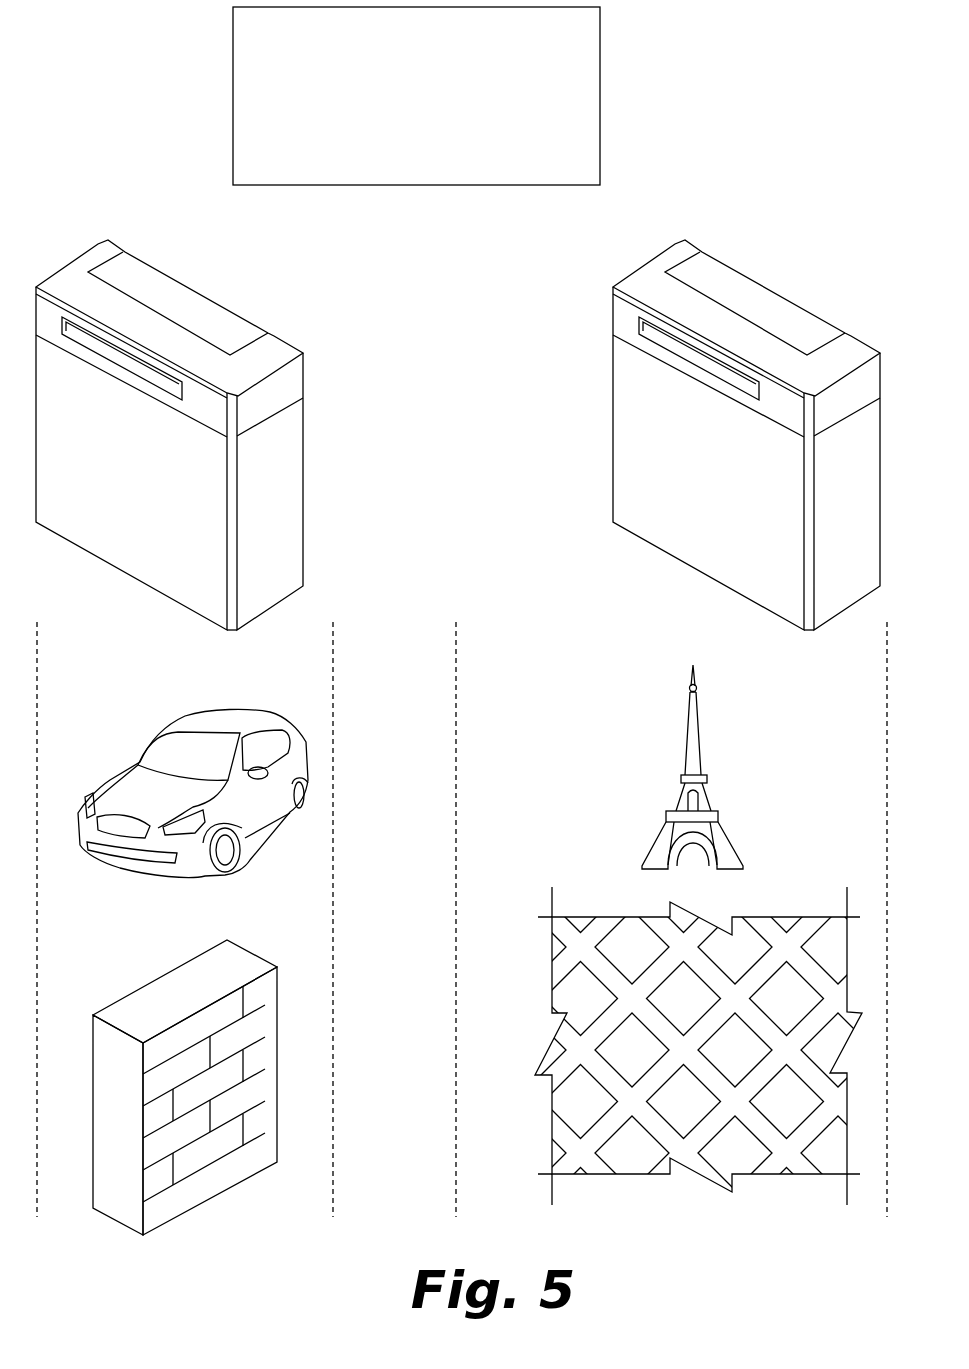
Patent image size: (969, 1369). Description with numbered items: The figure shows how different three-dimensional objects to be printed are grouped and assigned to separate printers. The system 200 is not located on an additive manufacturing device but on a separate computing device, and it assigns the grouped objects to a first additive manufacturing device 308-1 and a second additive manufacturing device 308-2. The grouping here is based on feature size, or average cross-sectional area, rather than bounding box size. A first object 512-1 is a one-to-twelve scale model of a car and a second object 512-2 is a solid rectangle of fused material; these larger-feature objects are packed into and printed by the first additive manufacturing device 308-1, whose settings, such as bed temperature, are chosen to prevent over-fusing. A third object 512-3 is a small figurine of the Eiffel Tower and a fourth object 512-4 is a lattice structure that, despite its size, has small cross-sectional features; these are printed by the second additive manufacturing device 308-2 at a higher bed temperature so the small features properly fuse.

The system 200 is at (397, 121).
The first additive manufacturing device 308-1 is at (109, 253).
The second additive manufacturing device 308-2 is at (762, 293).
The first object 512-1 is at (170, 730).
The second object 512-2 is at (168, 985).
The third object 512-3 is at (692, 755).
The fourth object 512-4 is at (560, 928).